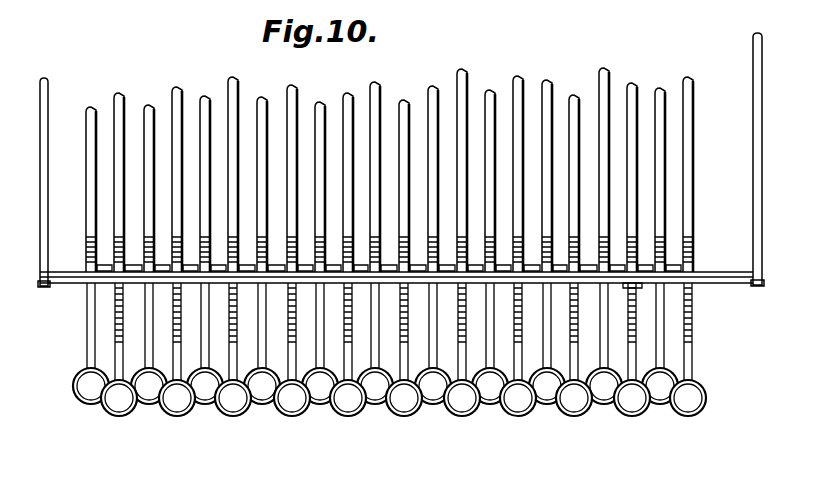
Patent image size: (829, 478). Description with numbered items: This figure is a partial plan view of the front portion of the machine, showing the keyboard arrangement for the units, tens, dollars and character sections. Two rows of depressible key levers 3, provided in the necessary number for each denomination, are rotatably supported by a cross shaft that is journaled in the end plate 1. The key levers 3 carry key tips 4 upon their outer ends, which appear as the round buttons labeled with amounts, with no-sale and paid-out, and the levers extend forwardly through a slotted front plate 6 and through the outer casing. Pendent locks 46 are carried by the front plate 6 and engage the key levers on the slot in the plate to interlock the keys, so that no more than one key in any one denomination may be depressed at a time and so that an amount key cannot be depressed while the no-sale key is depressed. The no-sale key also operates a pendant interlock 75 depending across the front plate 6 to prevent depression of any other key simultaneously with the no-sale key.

The end plate 1 is at (43, 228).
The key lever 3 is at (456, 77).
The key tip 4 is at (207, 405).
The slotted front plate 6 is at (80, 275).
The pendent lock 46 is at (680, 262).
The pendant interlock 75 is at (650, 286).